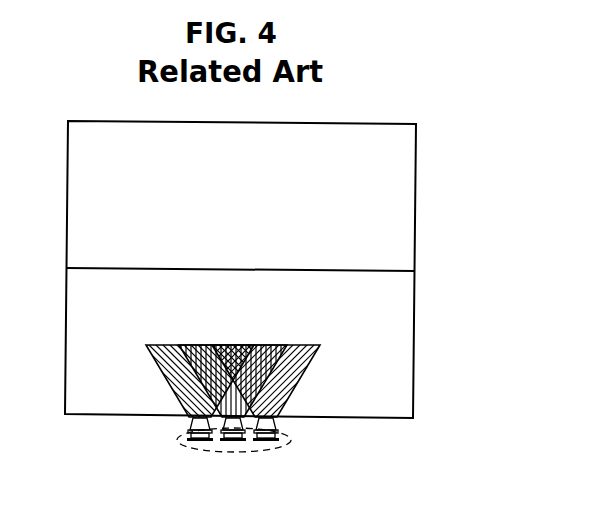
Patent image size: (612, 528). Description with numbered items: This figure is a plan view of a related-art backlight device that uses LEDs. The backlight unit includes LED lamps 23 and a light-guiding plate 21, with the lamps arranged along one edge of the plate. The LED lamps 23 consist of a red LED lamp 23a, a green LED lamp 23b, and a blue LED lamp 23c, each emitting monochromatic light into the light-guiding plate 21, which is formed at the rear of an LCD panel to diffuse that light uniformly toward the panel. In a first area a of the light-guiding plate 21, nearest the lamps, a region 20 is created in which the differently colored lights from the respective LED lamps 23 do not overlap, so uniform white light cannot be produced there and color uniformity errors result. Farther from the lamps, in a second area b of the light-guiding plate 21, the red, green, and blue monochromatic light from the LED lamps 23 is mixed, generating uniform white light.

The light-guiding plate 21 is at (296, 269).
The second area b is at (417, 220).
The first area a is at (412, 350).
The region 20 is at (180, 417).
The LED lamps 23 is at (258, 460).
The red LED lamp 23a is at (200, 448).
The green LED lamp 23b is at (233, 448).
The blue LED lamp 23c is at (267, 448).